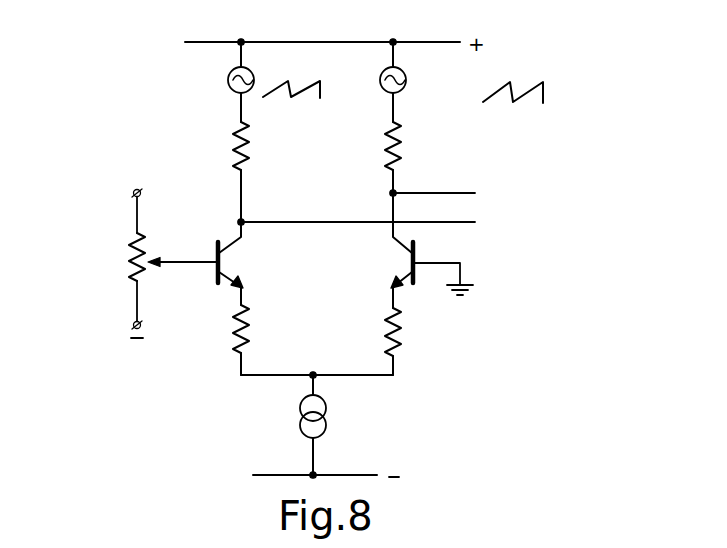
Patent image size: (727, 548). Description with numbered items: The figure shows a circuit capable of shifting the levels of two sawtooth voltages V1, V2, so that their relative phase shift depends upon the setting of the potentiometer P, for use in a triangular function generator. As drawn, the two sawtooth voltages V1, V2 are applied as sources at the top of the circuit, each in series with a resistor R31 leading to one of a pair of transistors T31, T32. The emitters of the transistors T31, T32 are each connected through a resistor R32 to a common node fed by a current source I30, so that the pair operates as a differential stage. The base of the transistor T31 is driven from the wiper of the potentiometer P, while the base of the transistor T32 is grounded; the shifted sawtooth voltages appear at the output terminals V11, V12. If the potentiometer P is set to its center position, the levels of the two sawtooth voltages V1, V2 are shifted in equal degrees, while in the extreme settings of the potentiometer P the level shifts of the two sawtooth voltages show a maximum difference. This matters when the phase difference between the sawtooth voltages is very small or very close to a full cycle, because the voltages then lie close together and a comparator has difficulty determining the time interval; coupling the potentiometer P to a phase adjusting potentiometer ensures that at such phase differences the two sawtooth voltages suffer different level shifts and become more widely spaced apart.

The first sawtooth voltage V1 is at (227, 78).
The second sawtooth voltage V2 is at (407, 82).
The collector resistors R31 is at (250, 140).
The emitter resistors R32 is at (250, 322).
The transistor T31 is at (238, 270).
The transistor T32 is at (394, 264).
The potentiometer P is at (130, 259).
The output voltage V11 is at (474, 226).
The output voltage V12 is at (474, 197).
The current source I30 is at (338, 395).